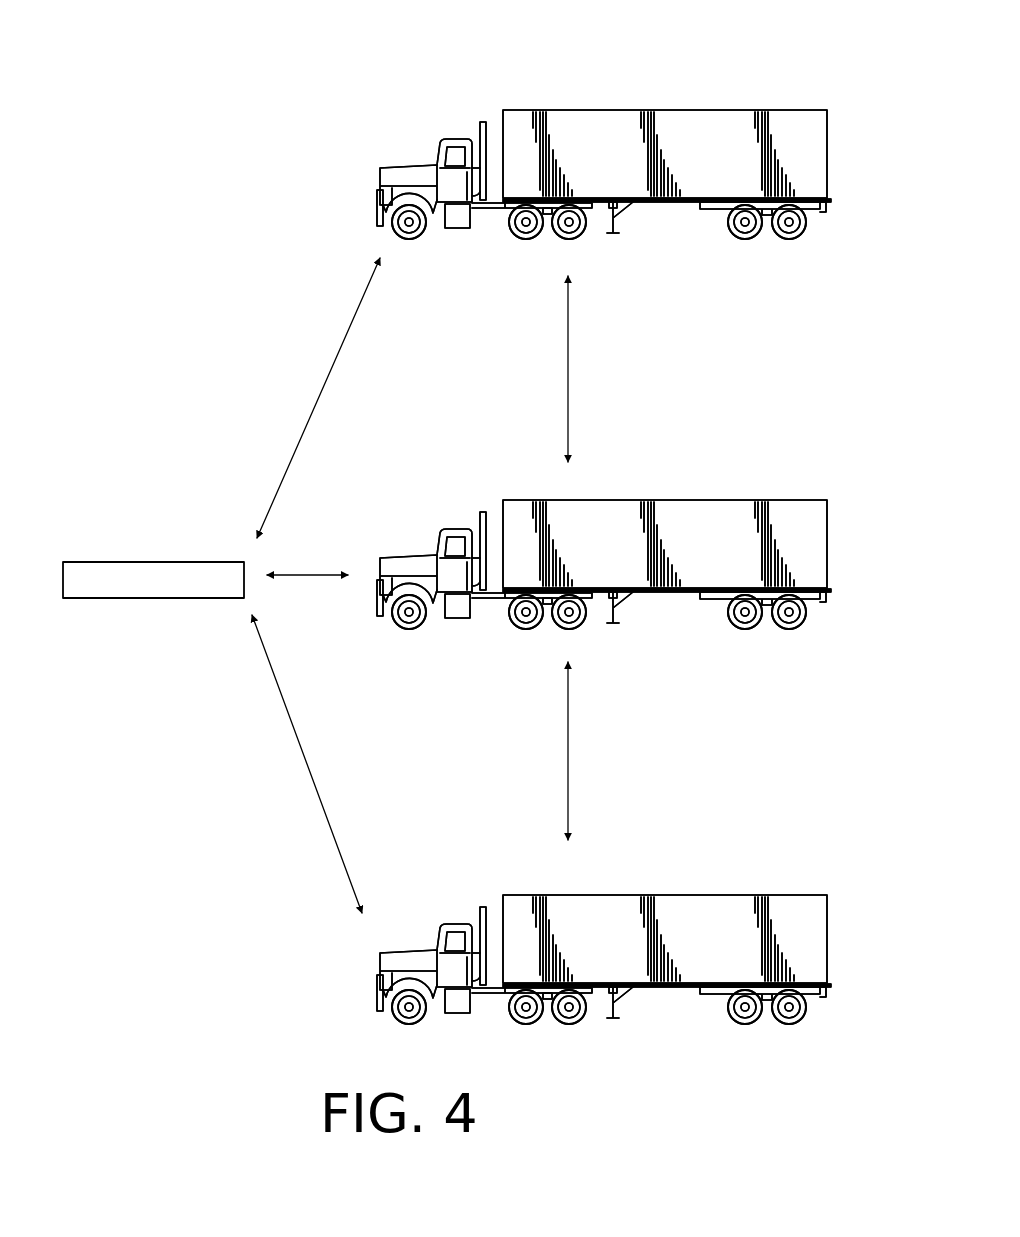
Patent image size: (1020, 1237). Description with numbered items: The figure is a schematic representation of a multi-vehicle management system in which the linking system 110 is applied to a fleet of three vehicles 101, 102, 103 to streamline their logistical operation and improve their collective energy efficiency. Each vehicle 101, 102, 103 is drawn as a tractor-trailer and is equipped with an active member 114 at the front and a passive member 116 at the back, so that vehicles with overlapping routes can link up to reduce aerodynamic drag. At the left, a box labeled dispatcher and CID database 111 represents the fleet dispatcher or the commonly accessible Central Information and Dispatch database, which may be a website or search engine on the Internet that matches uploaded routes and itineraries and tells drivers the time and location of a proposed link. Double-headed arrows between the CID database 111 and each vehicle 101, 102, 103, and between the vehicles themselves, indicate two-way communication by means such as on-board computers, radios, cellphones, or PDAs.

The linking system 110 is at (253, 178).
The Central Information and Dispatch (CID) database 111 is at (127, 598).
The vehicle 101 is at (668, 90).
The vehicle 102 is at (643, 470).
The vehicle 103 is at (653, 865).
The active member 114 is at (380, 207).
The passive member 116 is at (825, 202).